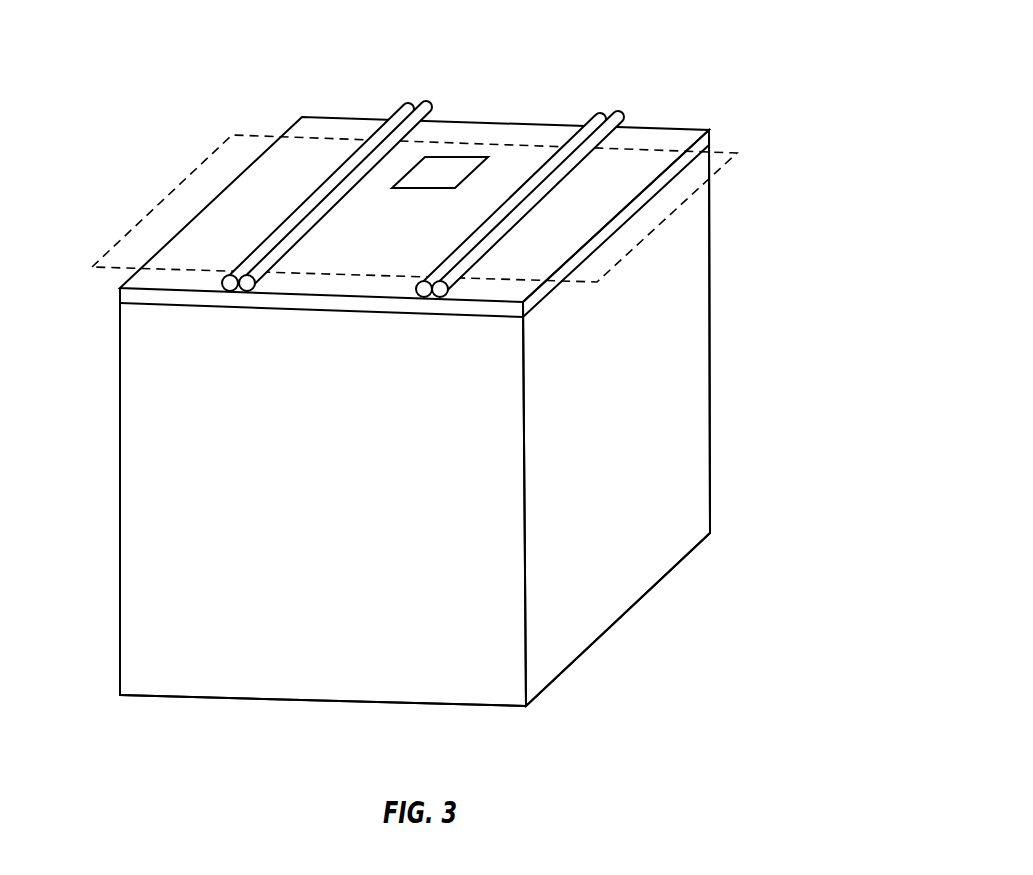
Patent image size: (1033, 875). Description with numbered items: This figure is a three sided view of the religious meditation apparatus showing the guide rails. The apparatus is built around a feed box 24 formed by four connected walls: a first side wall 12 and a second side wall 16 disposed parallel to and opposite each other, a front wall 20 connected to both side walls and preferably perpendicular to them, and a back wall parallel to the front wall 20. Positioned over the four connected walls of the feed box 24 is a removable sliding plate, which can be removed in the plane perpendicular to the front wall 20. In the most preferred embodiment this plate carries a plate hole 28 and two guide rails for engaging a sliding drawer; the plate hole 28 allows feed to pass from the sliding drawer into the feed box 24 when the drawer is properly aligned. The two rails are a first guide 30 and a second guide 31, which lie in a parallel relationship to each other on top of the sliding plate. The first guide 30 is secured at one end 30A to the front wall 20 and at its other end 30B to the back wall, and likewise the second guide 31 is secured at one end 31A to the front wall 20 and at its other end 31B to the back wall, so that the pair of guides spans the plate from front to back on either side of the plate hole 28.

The first side wall 12 is at (118, 492).
The second side wall 16 is at (692, 347).
The front wall 20 is at (287, 675).
The feed box 24 is at (757, 56).
The plate hole 28 is at (443, 168).
The first guide 30 is at (365, 164).
The end of first guide 30A is at (414, 104).
The other end of first guide 30B is at (427, 86).
The second guide 31 is at (559, 170).
The end of second guide 31A is at (609, 110).
The other end of second guide 31B is at (618, 98).